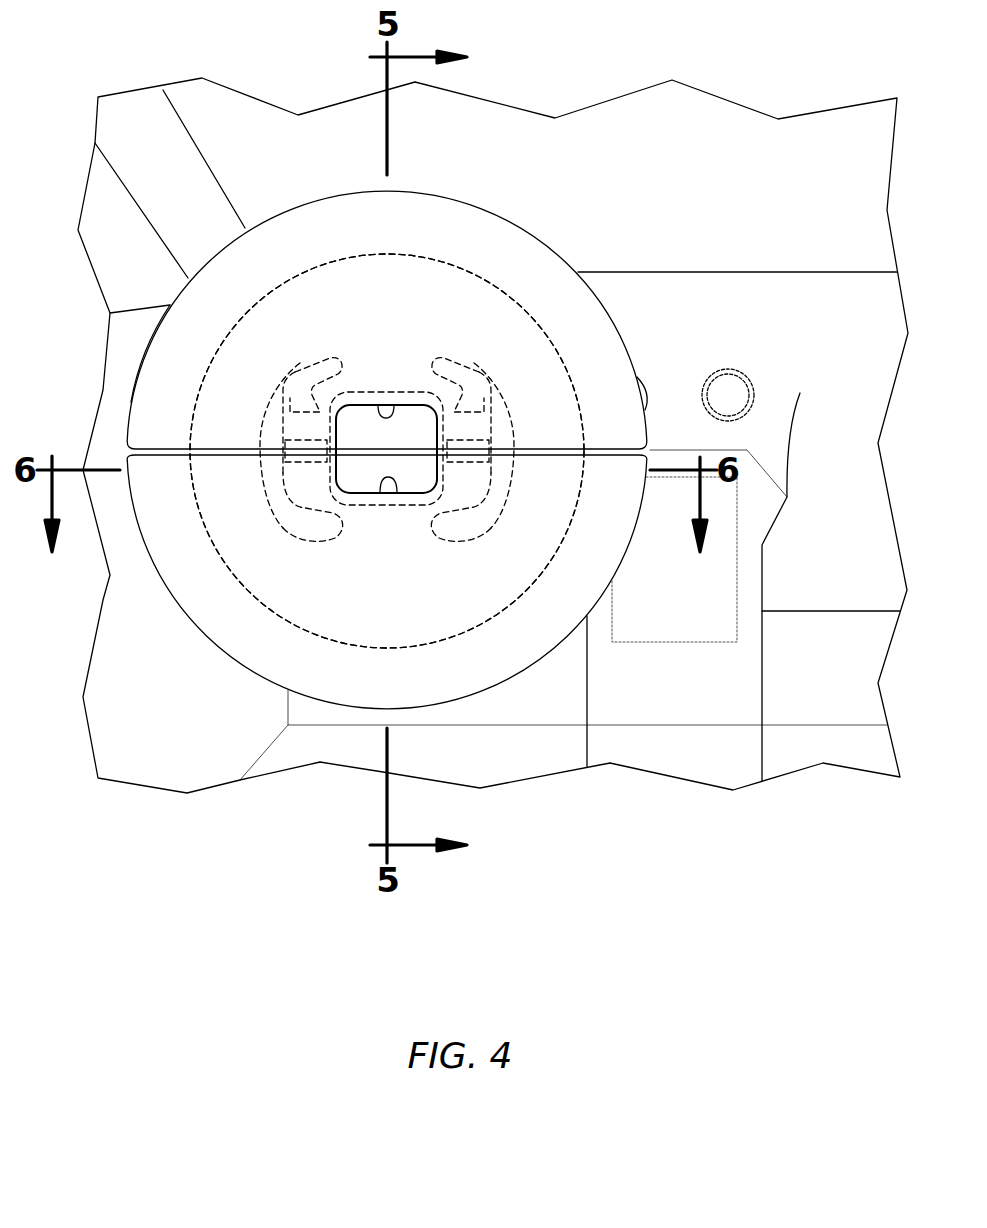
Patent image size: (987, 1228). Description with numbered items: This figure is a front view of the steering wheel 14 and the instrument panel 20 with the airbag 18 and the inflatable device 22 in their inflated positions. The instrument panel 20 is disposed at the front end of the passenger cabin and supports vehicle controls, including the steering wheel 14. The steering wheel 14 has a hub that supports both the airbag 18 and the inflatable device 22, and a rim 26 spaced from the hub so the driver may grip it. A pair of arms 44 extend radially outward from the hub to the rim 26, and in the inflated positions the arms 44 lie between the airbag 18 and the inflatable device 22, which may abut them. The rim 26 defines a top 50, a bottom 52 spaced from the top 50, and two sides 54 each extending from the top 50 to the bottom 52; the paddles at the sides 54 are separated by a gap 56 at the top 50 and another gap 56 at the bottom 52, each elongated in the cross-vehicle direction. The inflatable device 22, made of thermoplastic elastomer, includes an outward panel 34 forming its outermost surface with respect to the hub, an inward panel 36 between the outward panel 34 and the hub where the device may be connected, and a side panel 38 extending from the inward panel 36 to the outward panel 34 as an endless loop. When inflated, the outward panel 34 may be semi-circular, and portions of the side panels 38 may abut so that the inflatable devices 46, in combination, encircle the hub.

The steering wheel 14 is at (277, 512).
The airbag 18 is at (230, 326).
The instrument panel 20 is at (657, 272).
The inflatable device 22 is at (494, 207).
The rim 26 is at (262, 420).
The outward panel 34 is at (420, 190).
The inward panel 36 is at (387, 405).
The side panel 38 is at (297, 256).
The arms 44 is at (302, 363).
The inflatable devices 46 is at (394, 393).
The top 50 is at (405, 390).
The bottom 52 is at (393, 507).
The sides 54 is at (283, 473).
The gap 56 is at (360, 532).